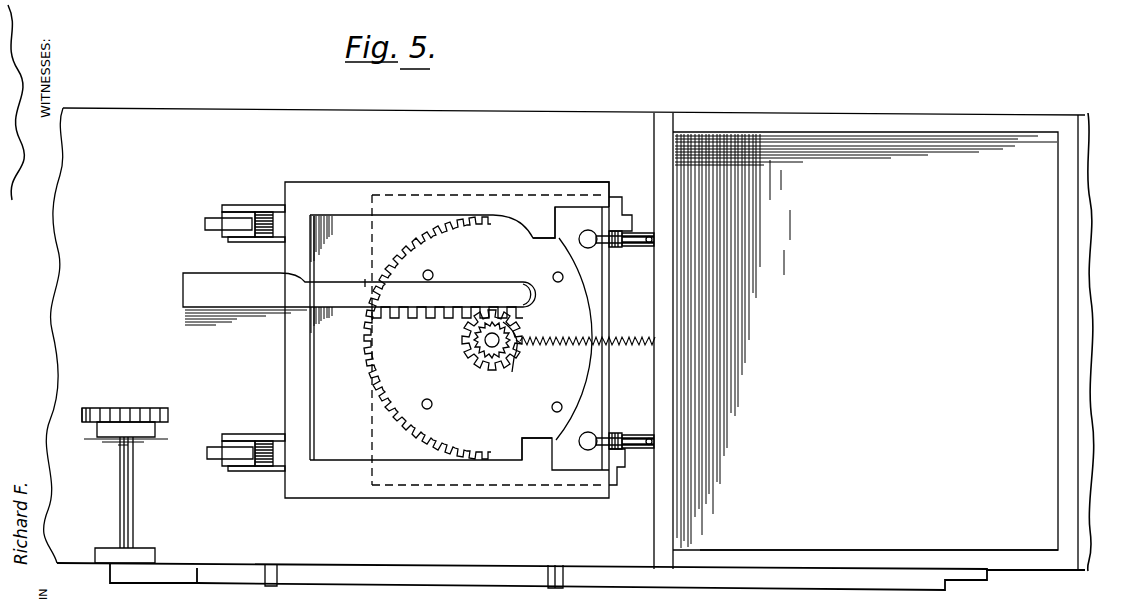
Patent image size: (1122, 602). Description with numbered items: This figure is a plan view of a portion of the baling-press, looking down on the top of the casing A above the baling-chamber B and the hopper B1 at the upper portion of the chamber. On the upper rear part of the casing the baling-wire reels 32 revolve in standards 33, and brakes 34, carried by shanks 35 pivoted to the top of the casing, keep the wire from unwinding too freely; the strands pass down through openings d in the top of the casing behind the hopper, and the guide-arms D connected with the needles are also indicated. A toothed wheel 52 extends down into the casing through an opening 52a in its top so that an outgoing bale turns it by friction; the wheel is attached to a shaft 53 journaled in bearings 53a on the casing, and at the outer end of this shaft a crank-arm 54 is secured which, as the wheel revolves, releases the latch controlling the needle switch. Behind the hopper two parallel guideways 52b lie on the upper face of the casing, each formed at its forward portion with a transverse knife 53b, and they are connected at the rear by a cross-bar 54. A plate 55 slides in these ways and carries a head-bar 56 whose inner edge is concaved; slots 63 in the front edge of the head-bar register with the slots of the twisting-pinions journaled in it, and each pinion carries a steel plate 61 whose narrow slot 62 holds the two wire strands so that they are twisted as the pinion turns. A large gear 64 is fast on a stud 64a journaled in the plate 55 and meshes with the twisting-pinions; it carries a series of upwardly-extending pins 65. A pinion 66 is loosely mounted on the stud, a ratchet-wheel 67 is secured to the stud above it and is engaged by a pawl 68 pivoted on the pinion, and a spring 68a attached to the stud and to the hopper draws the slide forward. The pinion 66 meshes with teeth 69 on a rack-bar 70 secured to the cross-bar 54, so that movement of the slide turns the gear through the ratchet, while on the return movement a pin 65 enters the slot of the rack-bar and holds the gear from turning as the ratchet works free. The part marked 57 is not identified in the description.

The casing A is at (569, 339).
The baling-chamber B is at (1100, 263).
The hopper B1 is at (908, 553).
The guide-arm D is at (626, 226).
The openings d is at (616, 248).
The reels 32 is at (262, 211).
The standards 33 is at (234, 205).
The brakes 34 is at (246, 239).
The shanks 35 is at (210, 225).
The toothed wheel 52 is at (130, 410).
The opening 52a is at (91, 407).
The guideways 52b is at (483, 184).
The shaft 53 is at (136, 500).
The bearings 53a is at (106, 438).
The knife 53b is at (556, 215).
The cross-bar 54 is at (304, 375).
The sliding plate 55 is at (427, 338).
The head-bar 56 is at (606, 297).
The spring 57 is at (600, 347).
The steel plate 61 is at (588, 231).
The slot 62 is at (583, 240).
The slots 63 is at (601, 206).
The large gear 64 is at (470, 346).
The stud 64a is at (514, 294).
The pins 65 is at (436, 405).
The pinion 66 is at (510, 366).
The ratchet-wheel 67 is at (489, 350).
The pawl 68 is at (514, 334).
The spring 68a is at (539, 354).
The teeth 69 is at (359, 295).
The rack-bar 70 is at (366, 282).